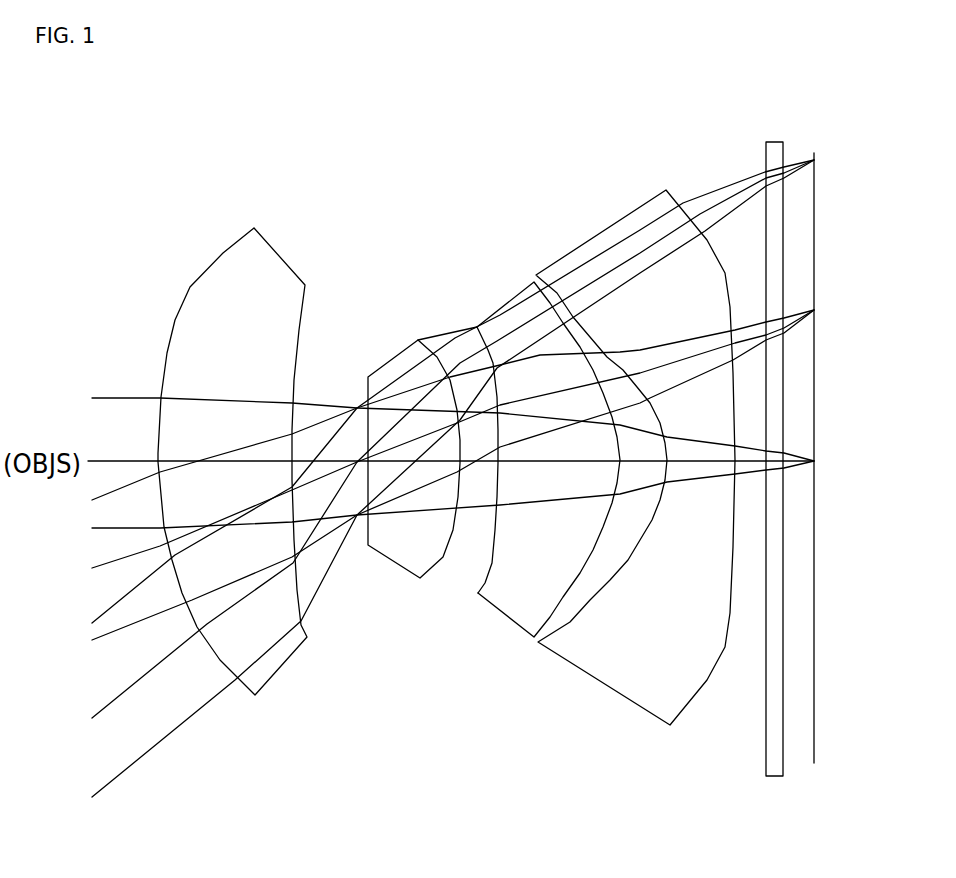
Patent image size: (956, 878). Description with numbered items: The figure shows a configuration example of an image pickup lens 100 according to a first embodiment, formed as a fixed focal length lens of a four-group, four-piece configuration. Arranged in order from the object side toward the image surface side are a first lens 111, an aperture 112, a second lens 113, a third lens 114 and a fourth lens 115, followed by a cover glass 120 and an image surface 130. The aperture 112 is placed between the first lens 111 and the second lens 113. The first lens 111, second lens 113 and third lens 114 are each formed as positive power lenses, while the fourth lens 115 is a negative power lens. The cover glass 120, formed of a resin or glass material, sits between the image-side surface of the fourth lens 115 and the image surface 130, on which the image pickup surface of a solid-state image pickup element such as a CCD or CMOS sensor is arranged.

The image pickup lens 100 is at (446, 140).
The first lens 111 is at (231, 272).
The aperture 112 is at (356, 406).
The second lens 113 is at (418, 344).
The third lens 114 is at (503, 305).
The fourth lens 115 is at (621, 232).
The cover glass 120 is at (777, 778).
The image surface 130 is at (815, 760).